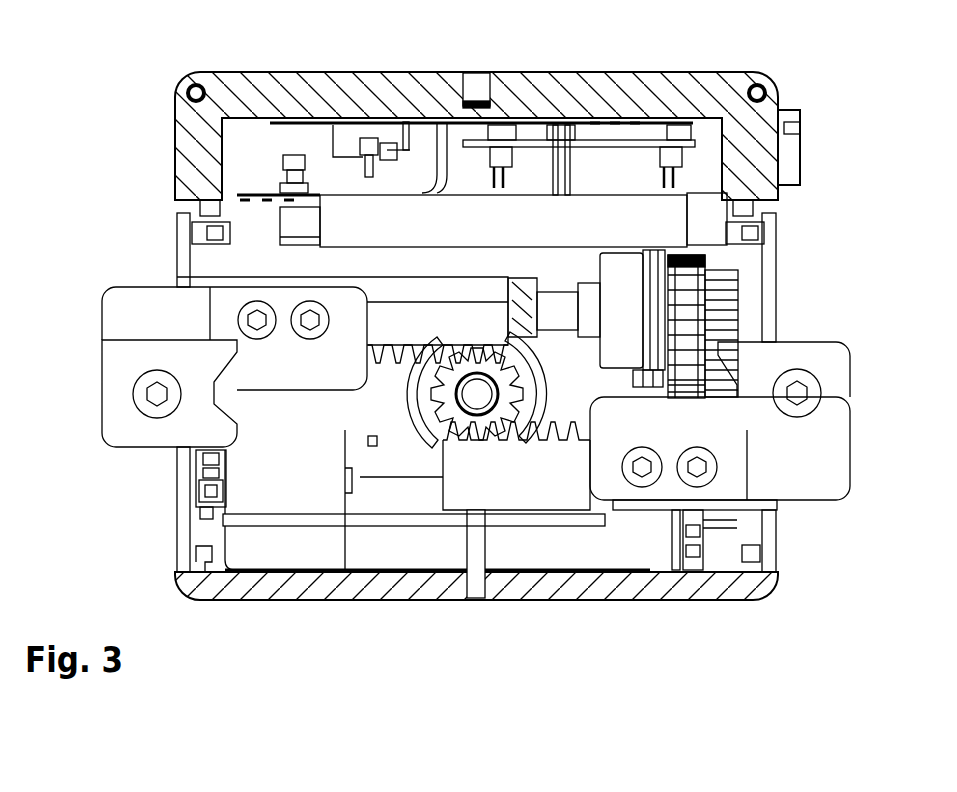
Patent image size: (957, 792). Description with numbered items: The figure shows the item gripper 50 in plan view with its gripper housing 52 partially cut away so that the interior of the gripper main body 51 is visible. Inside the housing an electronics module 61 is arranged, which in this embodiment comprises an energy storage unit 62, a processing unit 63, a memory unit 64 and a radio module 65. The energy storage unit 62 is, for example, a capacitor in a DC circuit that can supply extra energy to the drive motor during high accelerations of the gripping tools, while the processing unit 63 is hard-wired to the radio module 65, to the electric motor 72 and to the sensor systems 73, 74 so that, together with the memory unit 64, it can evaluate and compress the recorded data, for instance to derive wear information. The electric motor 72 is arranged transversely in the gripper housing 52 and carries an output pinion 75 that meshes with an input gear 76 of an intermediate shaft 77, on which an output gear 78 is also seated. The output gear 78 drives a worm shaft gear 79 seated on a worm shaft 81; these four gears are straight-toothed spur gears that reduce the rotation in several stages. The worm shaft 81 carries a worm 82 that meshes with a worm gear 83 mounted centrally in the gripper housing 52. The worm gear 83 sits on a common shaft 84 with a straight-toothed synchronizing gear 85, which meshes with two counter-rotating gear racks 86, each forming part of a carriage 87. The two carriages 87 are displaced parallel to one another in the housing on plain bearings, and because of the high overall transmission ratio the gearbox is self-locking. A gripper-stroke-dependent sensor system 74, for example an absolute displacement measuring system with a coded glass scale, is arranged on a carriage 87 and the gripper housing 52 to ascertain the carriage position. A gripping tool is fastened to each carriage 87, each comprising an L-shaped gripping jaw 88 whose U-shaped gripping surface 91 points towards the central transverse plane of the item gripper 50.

The item gripper 50 is at (156, 557).
The gripper main body 51 is at (656, 73).
The gripper housing 52 is at (193, 583).
The electronics module 61 is at (466, 120).
The energy storage unit 62 is at (557, 127).
The processing unit 63 is at (405, 138).
The memory unit 64 is at (505, 123).
The radio module 65 is at (343, 140).
The electric motor 72 is at (577, 540).
The sensor system 73 is at (225, 527).
The gripper-stroke-dependent sensor system 74 is at (452, 517).
The output pinion 75 is at (730, 521).
The input gear 76 is at (722, 285).
The intermediate shaft 77 is at (642, 375).
The output gear 78 is at (683, 380).
The worm shaft gear 79 is at (687, 267).
The worm shaft 81 is at (555, 310).
The worm 82 is at (505, 412).
The worm gear 83 is at (428, 430).
The common shaft 84 is at (477, 394).
The synchronizing gear 85 is at (450, 373).
The gear rack 86 is at (393, 350).
The carriage 87 is at (393, 288).
The gripping jaw 88 is at (118, 418).
The gripping surface 91 is at (150, 392).